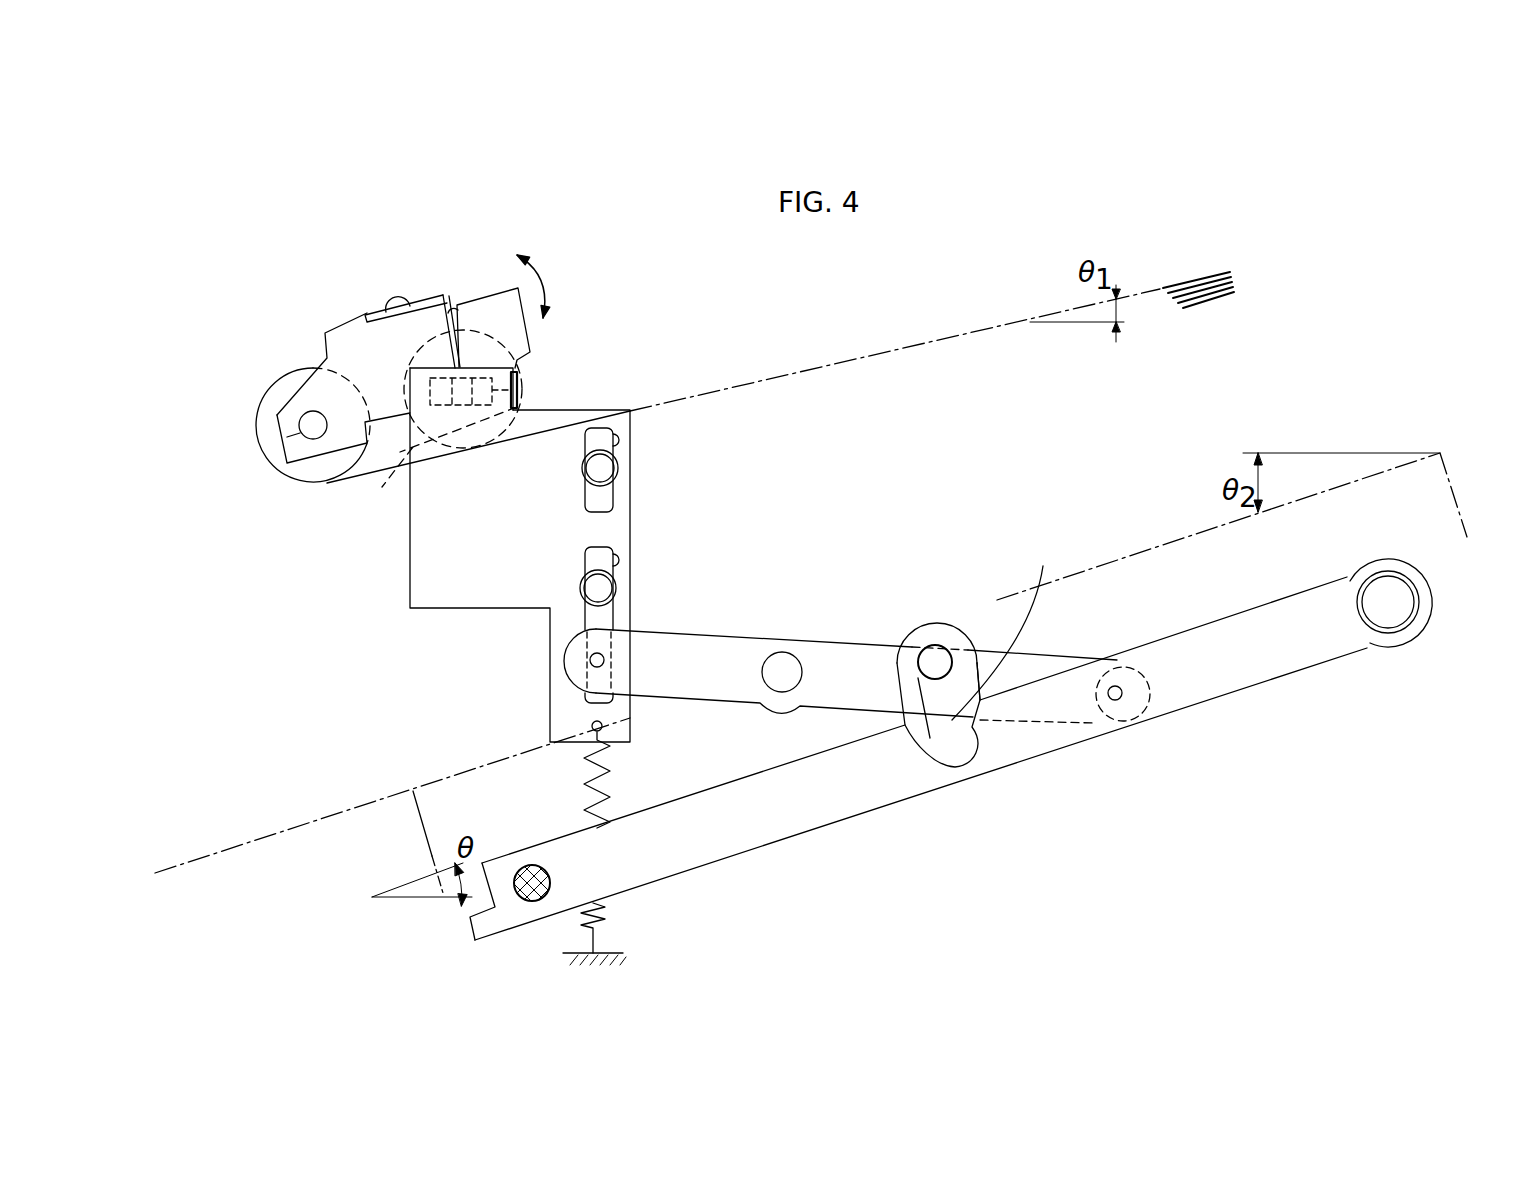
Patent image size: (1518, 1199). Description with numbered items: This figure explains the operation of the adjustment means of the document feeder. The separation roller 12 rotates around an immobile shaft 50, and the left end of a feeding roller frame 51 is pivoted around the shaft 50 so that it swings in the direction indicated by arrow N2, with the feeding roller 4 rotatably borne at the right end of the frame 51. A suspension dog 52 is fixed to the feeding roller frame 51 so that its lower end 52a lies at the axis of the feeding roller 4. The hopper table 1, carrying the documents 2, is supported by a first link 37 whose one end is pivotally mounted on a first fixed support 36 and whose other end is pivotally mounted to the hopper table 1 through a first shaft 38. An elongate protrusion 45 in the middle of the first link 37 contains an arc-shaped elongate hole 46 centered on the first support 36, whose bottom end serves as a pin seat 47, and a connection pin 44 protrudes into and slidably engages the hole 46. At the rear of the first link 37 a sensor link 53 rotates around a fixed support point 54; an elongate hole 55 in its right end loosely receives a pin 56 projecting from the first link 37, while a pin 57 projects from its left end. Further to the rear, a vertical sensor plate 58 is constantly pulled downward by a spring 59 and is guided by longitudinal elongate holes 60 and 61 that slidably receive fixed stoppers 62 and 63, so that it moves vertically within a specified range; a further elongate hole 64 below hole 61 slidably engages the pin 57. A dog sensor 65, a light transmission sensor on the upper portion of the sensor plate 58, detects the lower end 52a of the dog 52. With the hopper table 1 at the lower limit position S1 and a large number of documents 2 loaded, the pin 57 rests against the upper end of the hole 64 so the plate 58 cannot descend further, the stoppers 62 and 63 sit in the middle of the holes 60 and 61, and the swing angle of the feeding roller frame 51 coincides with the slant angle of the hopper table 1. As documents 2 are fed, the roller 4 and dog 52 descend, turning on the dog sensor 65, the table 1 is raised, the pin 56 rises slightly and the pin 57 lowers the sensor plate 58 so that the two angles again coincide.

The hopper table 1 is at (1180, 566).
The documents 2 is at (1204, 280).
The feeding roller 4 is at (518, 388).
The separation roller 12 is at (278, 387).
The first fixed support 36 is at (1397, 594).
The first link 37 is at (1225, 672).
The first shaft 38 is at (530, 900).
The connection pin 44 is at (935, 645).
The elongate protrusion 45 is at (963, 630).
The arc-shaped elongate hole 46 is at (1008, 629).
The pin seat 47 is at (958, 750).
The immobile shaft 50 is at (280, 462).
The feeding roller frame 51 is at (345, 340).
The suspension dog 52 is at (462, 302).
The lower end of the dog 52a is at (433, 428).
The sensor link 53 is at (706, 645).
The fixed support point 54 is at (782, 652).
The elongate hole 55 is at (1097, 724).
The pin 56 is at (1118, 686).
The pin 57 is at (590, 663).
The vertical sensor plate 58 is at (628, 519).
The spring 59 is at (610, 785).
The longitudinal elongate hole 60 is at (619, 440).
The longitudinal elongate hole 61 is at (619, 558).
The fixed stopper 62 is at (594, 470).
The fixed stopper 63 is at (583, 592).
The longitudinal elongate hole 64 is at (592, 728).
The dog sensor 65 is at (525, 366).
The swing direction arrow N2 is at (551, 286).
The lower limit position S1 is at (412, 827).